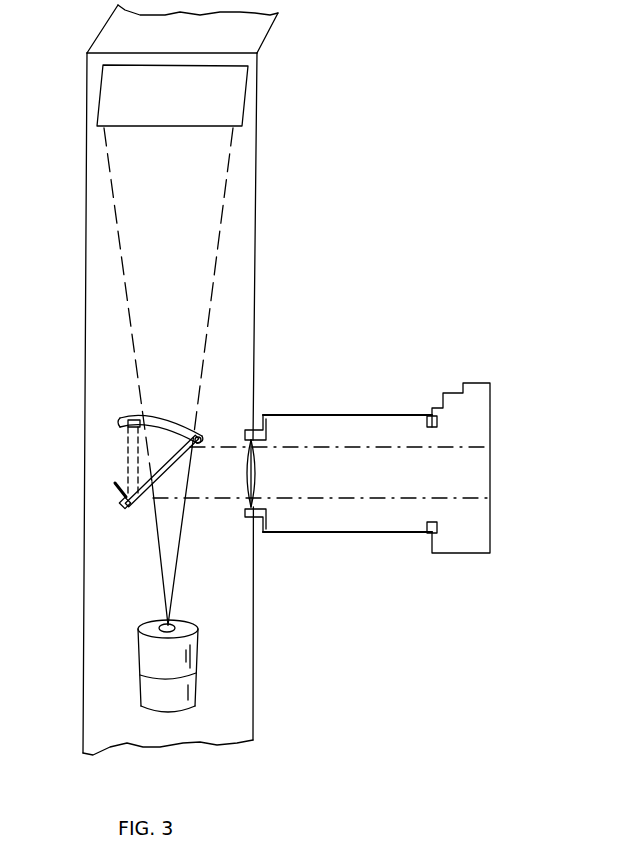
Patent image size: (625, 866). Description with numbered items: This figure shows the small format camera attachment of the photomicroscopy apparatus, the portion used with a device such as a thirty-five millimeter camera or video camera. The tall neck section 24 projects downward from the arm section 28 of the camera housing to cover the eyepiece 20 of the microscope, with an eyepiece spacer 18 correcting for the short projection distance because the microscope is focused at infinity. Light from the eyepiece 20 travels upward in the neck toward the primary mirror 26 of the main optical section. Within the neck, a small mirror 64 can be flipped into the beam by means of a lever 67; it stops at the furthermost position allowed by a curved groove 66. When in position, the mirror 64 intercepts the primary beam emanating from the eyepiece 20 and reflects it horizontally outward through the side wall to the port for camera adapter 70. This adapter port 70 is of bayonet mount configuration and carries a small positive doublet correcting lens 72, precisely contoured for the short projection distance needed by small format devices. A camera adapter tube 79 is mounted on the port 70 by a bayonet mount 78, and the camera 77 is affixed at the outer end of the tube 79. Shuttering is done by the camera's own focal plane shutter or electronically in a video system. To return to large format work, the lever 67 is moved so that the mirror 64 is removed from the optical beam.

The eyepiece spacer 18 is at (200, 655).
The eyepiece 20 is at (153, 625).
The neck section 24 is at (87, 232).
The primary mirror 26 is at (108, 105).
The arm section 28 is at (113, 33).
The small mirror 64 is at (155, 470).
The curved groove 66 is at (122, 420).
The lever 67 is at (127, 501).
The port for camera adapter 70 is at (255, 428).
The correcting lens 72 is at (255, 490).
The camera 77 is at (492, 432).
The bayonet mount 78 is at (430, 414).
The camera adapter tube 79 is at (330, 416).